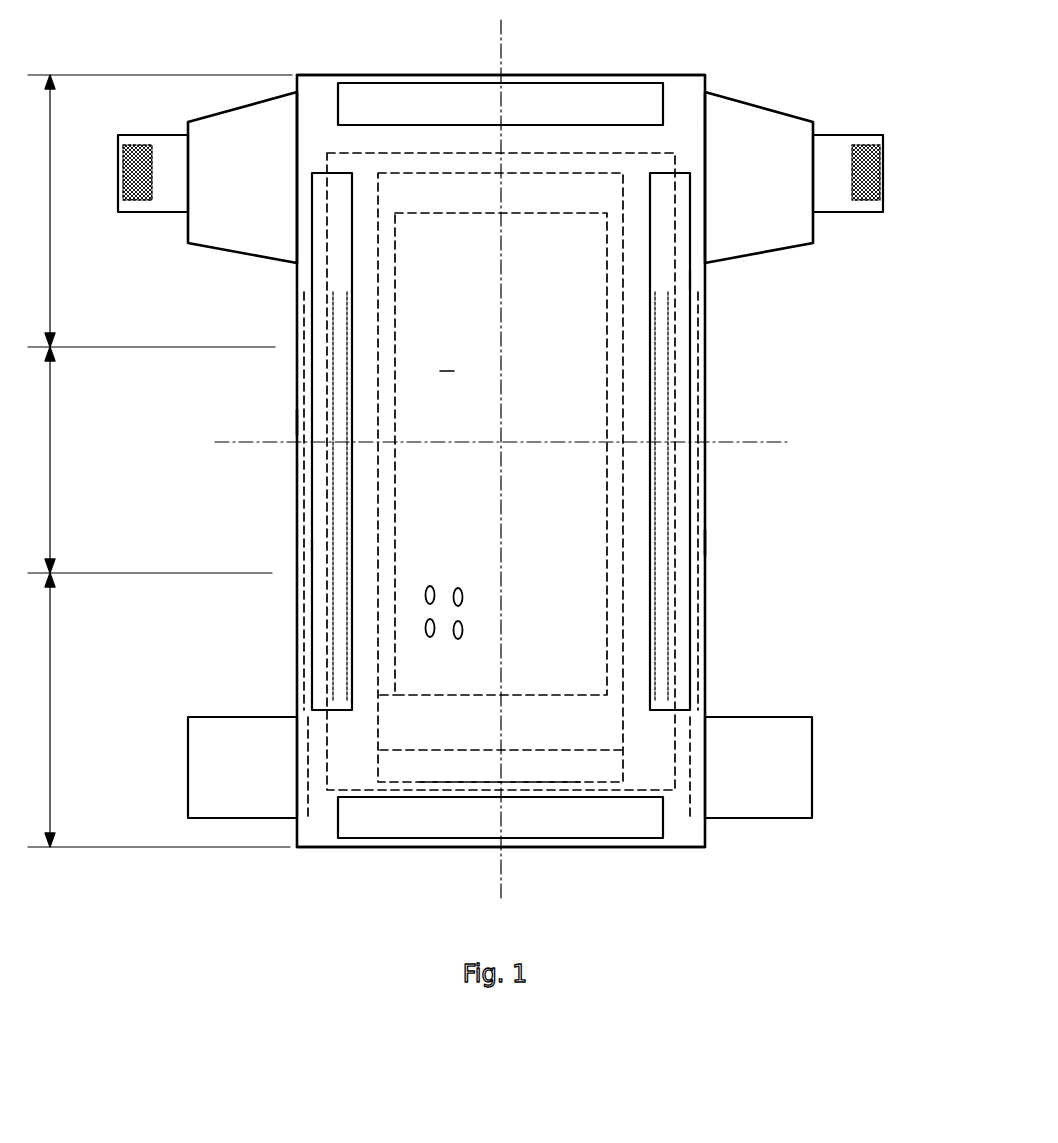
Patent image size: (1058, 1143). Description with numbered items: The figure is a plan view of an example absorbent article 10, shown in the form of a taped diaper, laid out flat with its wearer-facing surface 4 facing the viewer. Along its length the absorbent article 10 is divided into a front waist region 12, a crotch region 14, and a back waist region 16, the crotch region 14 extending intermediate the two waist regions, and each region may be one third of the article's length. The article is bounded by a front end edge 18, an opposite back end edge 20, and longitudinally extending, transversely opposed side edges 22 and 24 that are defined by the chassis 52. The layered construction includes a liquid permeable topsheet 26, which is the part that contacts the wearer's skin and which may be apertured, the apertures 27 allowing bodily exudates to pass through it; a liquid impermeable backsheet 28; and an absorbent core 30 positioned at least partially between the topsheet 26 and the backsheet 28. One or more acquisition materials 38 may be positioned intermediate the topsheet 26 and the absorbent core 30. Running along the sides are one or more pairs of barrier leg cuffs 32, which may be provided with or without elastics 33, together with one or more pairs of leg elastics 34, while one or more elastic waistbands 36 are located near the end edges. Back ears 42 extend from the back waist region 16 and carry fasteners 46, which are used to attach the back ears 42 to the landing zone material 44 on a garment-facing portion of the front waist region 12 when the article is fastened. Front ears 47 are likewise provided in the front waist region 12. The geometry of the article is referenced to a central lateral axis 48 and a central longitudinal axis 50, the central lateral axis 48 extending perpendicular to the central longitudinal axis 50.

The wearer-facing surface 4 is at (446, 358).
The absorbent article 10 is at (852, 411).
The front waist region 12 is at (152, 710).
The crotch region 14 is at (143, 460).
The back waist region 16 is at (153, 211).
The front end edge 18 is at (312, 848).
The back end edge 20 is at (375, 75).
The side edge 22 is at (297, 300).
The side edge 24 is at (705, 318).
The topsheet 26 is at (575, 607).
The apertures 27 is at (425, 630).
The backsheet 28 is at (643, 152).
The absorbent core 30 is at (473, 173).
The barrier leg cuffs 32 is at (312, 550).
The elastics 33 is at (308, 372).
The leg elastics 34 is at (297, 422).
The elastic waistbands 36 is at (530, 92).
The acquisition material 38 is at (552, 212).
The back ears 42 is at (184, 88).
The landing zone material 44 is at (530, 790).
The fasteners 46 is at (884, 178).
The front ears 47 is at (212, 752).
The central lateral axis 48 is at (738, 443).
The central longitudinal axis 50 is at (500, 873).
The chassis 52 is at (255, 485).